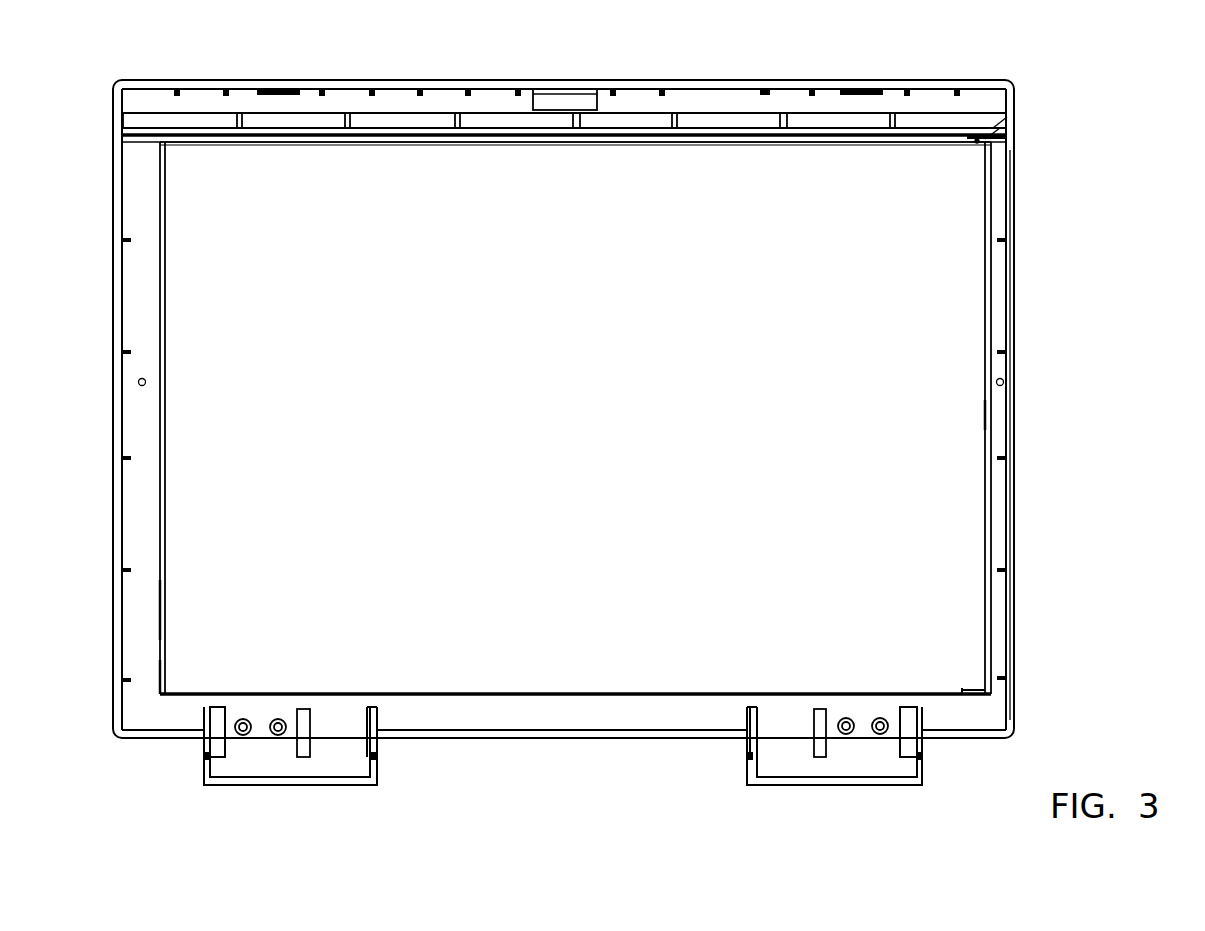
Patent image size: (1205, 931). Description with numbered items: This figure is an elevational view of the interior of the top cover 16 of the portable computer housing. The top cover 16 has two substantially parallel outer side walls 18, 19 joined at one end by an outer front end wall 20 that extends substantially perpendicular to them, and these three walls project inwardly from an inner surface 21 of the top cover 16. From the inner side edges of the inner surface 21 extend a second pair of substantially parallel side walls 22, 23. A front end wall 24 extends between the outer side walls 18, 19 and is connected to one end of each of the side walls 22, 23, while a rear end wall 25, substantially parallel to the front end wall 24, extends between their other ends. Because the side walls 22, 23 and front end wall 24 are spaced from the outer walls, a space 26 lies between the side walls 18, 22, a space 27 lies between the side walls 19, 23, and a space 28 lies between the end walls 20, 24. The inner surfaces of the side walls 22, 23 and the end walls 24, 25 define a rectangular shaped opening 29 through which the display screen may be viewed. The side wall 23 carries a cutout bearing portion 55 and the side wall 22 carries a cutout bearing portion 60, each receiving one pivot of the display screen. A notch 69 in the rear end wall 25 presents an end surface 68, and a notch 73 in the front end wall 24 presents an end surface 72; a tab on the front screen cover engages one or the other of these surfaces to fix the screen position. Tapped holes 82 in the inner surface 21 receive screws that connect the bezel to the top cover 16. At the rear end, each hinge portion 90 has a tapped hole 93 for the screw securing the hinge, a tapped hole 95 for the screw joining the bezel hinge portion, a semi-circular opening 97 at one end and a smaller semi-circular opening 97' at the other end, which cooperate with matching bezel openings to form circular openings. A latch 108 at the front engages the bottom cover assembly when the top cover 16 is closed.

The top cover 16 is at (441, 80).
The outer side wall 18 is at (113, 447).
The outer side wall 19 is at (1014, 152).
The outer front end wall 20 is at (808, 80).
The inner surface 21 is at (140, 704).
The side wall 22 is at (158, 605).
The side wall 23 is at (985, 320).
The front end wall 24 is at (313, 147).
The rear end wall 25 is at (545, 696).
The space 26 is at (131, 478).
The space 27 is at (1000, 208).
The space 28 is at (400, 118).
The rectangular shaped opening 29 is at (163, 512).
The cutout bearing portion 55 is at (985, 417).
The cutout bearing portion 60 is at (163, 410).
The end surface 68 is at (978, 695).
The notch 69 is at (973, 684).
The end surface 72 is at (977, 144).
The notch 73 is at (993, 128).
The tapped hole 82 is at (145, 380).
The hinge portion 90 is at (355, 786).
The tapped hole 93 is at (278, 719).
The tapped hole 95 is at (243, 735).
The semi-circular opening 97 is at (563, 765).
The semi-circular opening 97' is at (566, 800).
The latch 108 is at (578, 92).